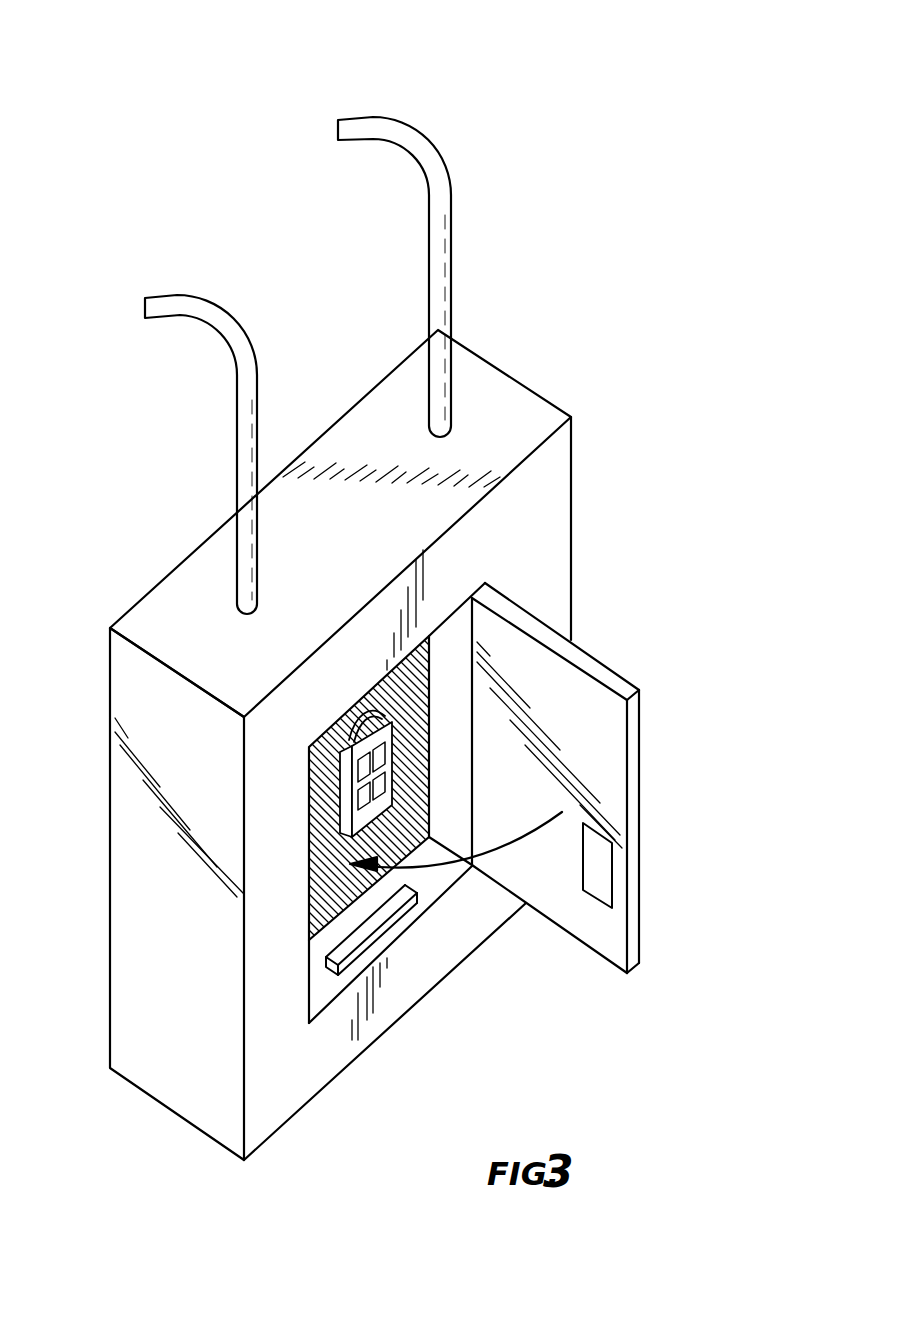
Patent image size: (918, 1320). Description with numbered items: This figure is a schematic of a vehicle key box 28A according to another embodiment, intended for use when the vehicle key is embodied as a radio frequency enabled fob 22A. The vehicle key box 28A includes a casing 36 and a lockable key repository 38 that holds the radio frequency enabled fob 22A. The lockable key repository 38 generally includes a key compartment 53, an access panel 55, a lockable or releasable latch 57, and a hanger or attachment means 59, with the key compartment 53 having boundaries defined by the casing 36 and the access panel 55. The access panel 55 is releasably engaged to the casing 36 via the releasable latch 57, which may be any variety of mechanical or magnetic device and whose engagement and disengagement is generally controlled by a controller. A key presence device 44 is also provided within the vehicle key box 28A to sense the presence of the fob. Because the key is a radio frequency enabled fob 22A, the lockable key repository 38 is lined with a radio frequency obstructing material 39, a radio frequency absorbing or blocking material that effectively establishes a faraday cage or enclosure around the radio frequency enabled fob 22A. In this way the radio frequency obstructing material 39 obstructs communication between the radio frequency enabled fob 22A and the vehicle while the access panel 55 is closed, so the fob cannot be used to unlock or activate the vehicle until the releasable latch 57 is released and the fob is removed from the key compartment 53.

The vehicle key box 28A is at (413, 606).
The hanger or attachment means 59 is at (174, 295).
The casing 36 is at (538, 506).
The key compartment 53 is at (443, 645).
The lockable key repository 38 is at (594, 778).
The access panel 55 is at (633, 847).
The releasable latch 57 is at (612, 878).
The radio frequency obstructing material 39 is at (335, 890).
The key presence device 44 is at (373, 934).
The radio frequency enabled fob 22A is at (357, 813).